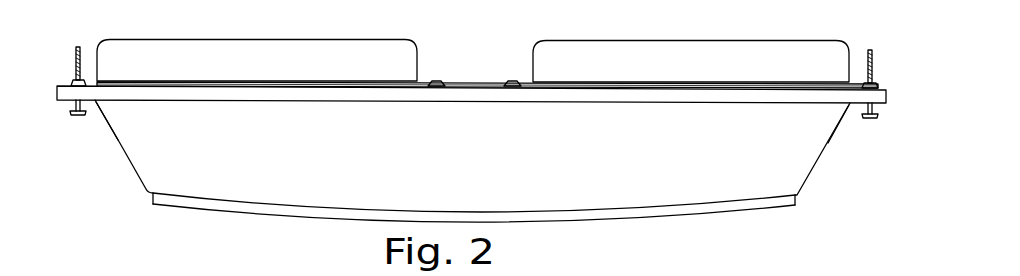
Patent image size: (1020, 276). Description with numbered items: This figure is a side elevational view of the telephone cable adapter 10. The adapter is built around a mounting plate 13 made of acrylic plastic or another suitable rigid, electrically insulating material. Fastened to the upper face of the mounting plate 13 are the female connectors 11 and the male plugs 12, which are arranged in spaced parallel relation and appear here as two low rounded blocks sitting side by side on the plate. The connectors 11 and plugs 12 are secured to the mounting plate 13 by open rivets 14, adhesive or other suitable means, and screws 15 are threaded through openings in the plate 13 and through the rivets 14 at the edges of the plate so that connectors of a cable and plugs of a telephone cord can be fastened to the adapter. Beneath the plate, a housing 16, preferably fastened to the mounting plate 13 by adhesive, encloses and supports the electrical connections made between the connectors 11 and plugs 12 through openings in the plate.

The telephone cable adapter 10 is at (817, 166).
The female connectors 11 is at (200, 46).
The male plugs 12 is at (748, 48).
The mounting plate 13 is at (570, 92).
The open rivets 14 is at (72, 80).
The screws 15 is at (70, 106).
The housing 16 is at (488, 164).